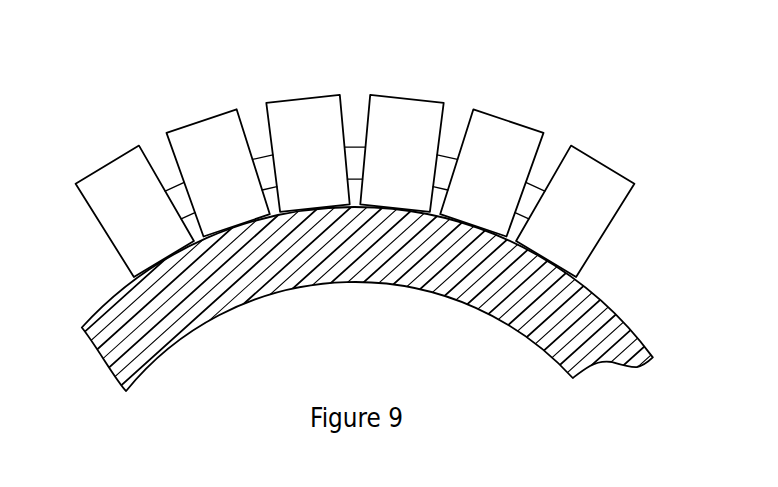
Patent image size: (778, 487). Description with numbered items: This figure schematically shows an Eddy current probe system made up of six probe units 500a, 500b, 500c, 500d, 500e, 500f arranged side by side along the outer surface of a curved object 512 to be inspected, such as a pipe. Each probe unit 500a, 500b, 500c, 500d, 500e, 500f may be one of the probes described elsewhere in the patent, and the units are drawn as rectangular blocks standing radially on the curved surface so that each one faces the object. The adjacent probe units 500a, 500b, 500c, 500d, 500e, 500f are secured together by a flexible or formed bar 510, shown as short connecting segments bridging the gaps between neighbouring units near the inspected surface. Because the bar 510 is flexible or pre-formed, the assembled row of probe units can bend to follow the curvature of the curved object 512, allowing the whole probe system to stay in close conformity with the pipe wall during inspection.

The probe unit 500a is at (108, 164).
The probe unit 500b is at (234, 112).
The probe unit 500c is at (334, 96).
The probe unit 500d is at (374, 97).
The probe unit 500e is at (486, 113).
The probe unit 500f is at (596, 161).
The flexible or formed bar 510 is at (166, 190).
The curved object 512 is at (109, 299).